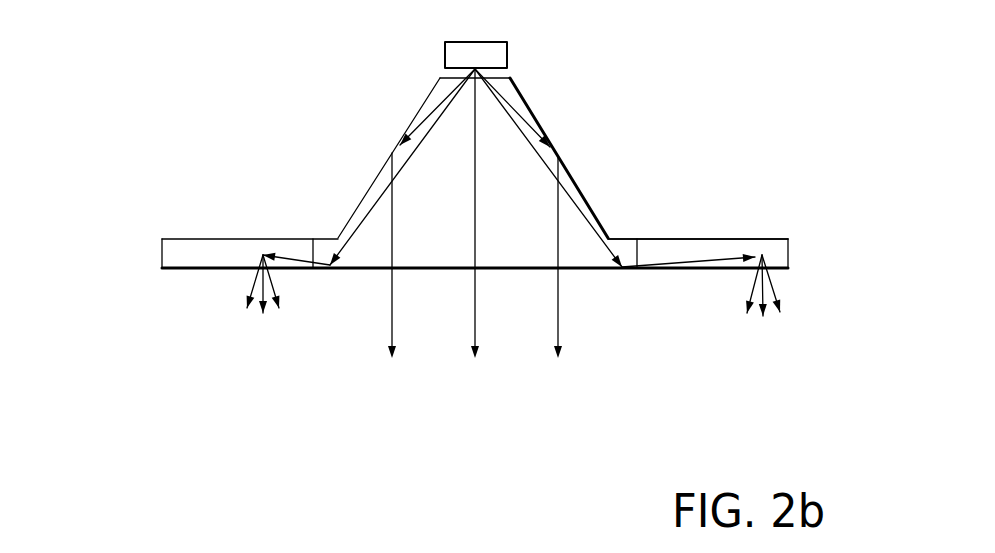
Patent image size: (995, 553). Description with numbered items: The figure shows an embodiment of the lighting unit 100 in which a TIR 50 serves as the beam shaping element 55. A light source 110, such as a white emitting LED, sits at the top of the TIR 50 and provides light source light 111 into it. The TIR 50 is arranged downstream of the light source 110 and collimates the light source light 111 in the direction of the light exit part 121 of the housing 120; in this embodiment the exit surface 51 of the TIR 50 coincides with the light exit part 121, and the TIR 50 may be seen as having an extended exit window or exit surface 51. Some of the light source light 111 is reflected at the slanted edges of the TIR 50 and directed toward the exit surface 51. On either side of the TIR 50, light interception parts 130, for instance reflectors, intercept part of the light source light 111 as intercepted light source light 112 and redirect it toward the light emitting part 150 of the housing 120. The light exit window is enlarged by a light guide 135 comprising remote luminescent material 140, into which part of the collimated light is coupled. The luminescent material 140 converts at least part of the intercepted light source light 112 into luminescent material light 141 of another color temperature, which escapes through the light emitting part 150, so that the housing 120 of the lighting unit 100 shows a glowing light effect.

The lighting unit 100 is at (140, 250).
The light source 110 is at (507, 47).
The light source light 111 is at (372, 213).
The intercepted light source light 112 is at (293, 252).
The housing 120 is at (770, 216).
The light exit part 121 is at (507, 270).
The light interception part 130 is at (352, 255).
The light guide 135 is at (333, 237).
The luminescent material 140 is at (205, 252).
The luminescent material light 141 is at (247, 285).
The light emitting part 150 is at (183, 270).
The TIR 50 is at (513, 178).
The exit surface 51 is at (443, 270).
The beam shaping element 55 is at (582, 117).